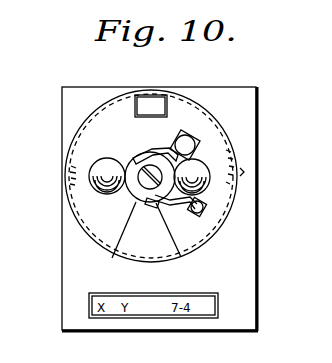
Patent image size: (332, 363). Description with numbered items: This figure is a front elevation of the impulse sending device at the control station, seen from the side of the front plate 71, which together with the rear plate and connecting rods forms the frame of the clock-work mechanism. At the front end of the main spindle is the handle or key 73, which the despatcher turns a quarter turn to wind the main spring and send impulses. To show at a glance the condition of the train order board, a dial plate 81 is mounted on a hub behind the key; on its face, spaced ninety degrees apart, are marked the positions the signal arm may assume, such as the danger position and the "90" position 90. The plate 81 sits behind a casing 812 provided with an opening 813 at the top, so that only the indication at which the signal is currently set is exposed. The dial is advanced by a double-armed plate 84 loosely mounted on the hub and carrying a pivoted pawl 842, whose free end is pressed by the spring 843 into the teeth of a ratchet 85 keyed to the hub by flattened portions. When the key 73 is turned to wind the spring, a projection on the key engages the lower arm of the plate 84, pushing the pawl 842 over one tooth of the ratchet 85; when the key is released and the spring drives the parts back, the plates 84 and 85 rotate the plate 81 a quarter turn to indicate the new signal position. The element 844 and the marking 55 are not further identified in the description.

The front plate 71 is at (242, 257).
The handle or key 73 is at (97, 183).
The plate 81 is at (165, 104).
The "90" position 90 is at (151, 106).
The casing 812 is at (233, 156).
The opening 813 is at (134, 107).
The pawl 842 is at (197, 147).
The spring 843 is at (243, 172).
The catch roller 844 is at (190, 137).
The double-armed plate 84 is at (115, 239).
The ratchet 85 is at (178, 239).
The marking 55 is at (152, 249).